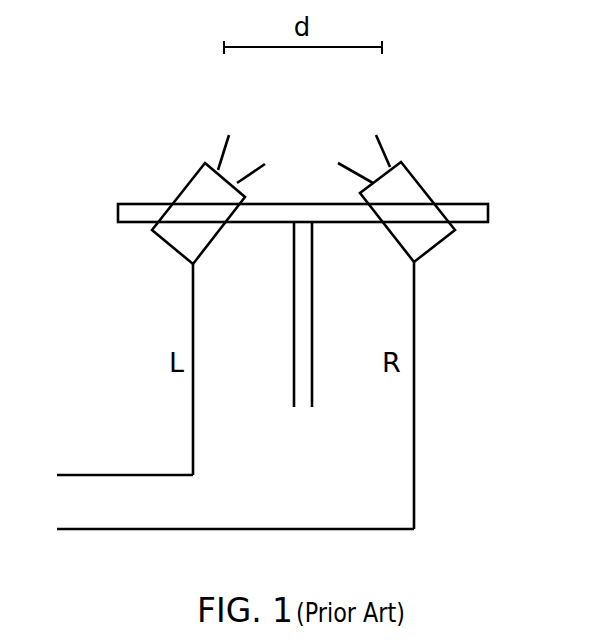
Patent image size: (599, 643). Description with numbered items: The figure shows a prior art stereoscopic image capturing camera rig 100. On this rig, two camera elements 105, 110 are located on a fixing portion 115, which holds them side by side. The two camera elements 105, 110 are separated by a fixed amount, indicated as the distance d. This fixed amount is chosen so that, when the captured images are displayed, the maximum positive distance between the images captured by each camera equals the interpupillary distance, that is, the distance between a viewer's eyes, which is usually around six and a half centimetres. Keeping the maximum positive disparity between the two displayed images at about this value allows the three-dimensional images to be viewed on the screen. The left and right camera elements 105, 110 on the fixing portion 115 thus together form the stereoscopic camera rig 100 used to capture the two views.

The stereoscopic image capturing camera rig 100 is at (127, 126).
The camera element 105 is at (247, 150).
The camera element 110 is at (418, 160).
The fixing portion 115 is at (488, 208).